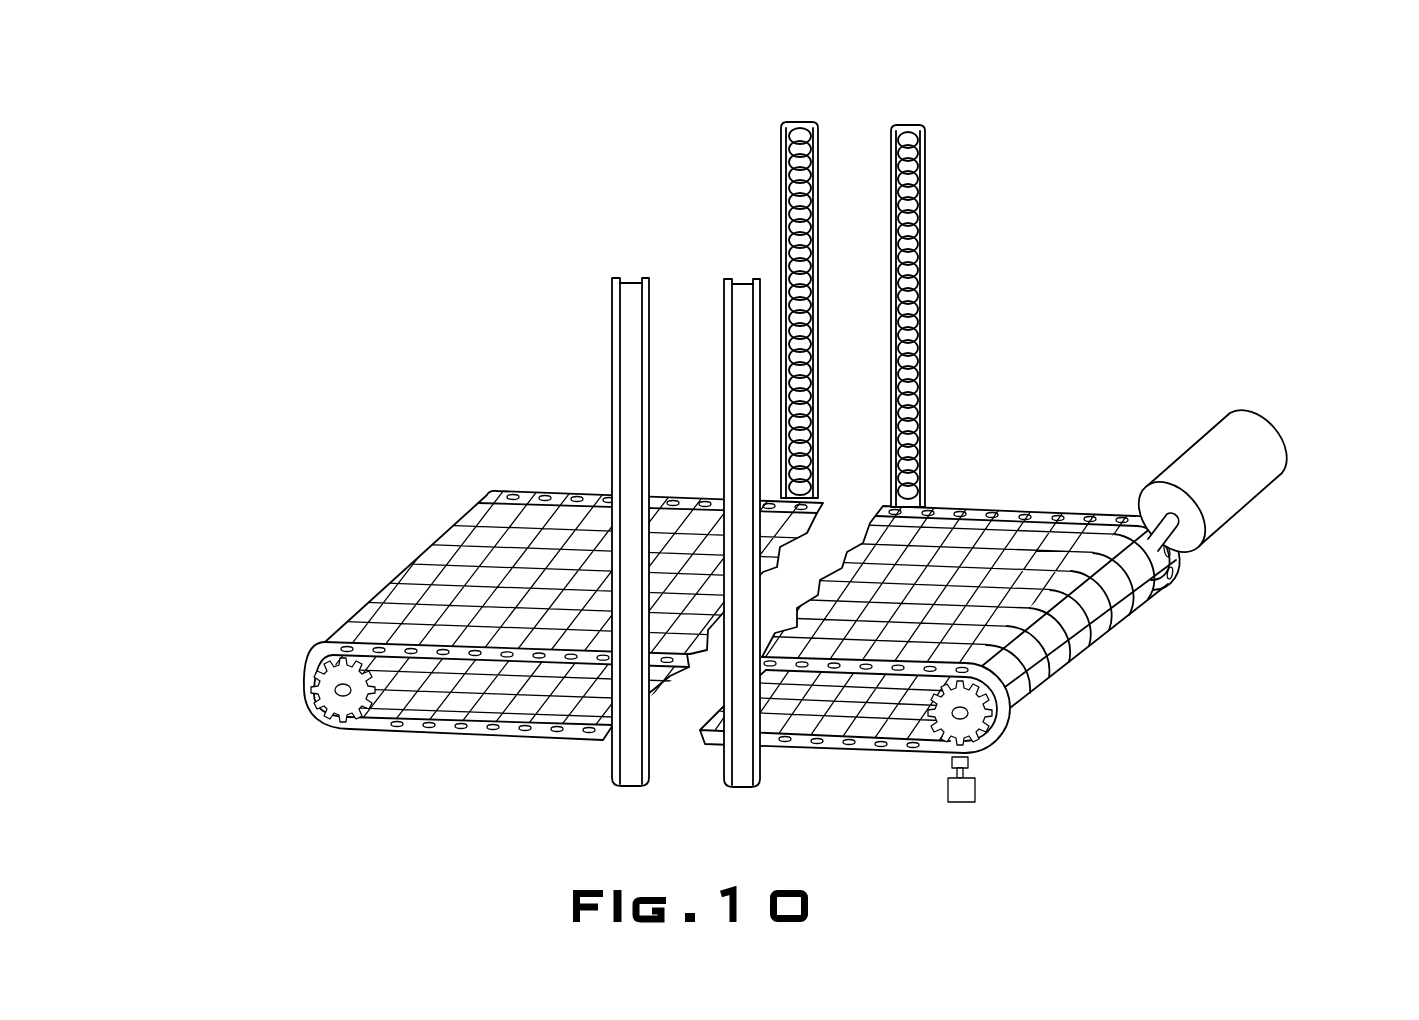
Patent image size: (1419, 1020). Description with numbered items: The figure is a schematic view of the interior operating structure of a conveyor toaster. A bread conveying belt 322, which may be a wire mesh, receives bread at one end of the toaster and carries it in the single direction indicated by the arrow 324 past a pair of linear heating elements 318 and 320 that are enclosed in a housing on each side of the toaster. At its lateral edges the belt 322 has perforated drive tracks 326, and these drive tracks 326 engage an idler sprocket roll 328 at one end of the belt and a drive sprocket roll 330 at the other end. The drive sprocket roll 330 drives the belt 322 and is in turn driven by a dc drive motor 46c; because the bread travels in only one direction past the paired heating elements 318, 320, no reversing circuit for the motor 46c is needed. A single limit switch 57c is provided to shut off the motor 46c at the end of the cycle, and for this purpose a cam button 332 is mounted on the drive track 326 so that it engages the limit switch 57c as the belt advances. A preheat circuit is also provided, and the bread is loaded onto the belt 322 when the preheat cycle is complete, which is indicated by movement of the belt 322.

The linear heating element 318 is at (620, 363).
The linear heating element 320 is at (888, 180).
The bread conveying belt 322 is at (473, 550).
The arrow 324 is at (560, 461).
The perforated drive tracks 326 is at (530, 648).
The idler sprocket roll 328 is at (320, 690).
The drive sprocket roll 330 is at (990, 733).
The cam button 332 is at (952, 762).
The limit switch 57c is at (975, 790).
The dc drive motor 46c is at (1233, 490).